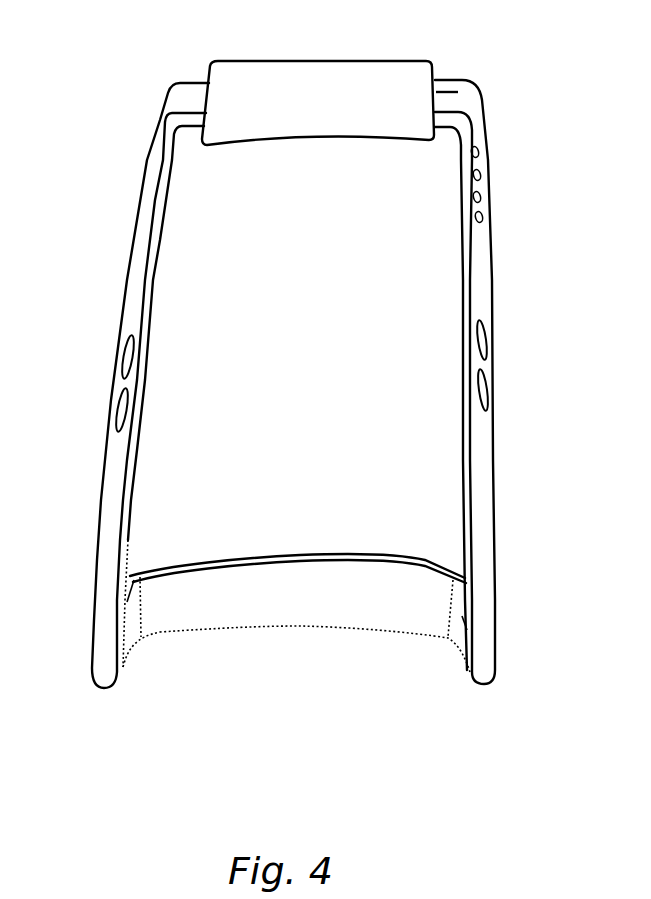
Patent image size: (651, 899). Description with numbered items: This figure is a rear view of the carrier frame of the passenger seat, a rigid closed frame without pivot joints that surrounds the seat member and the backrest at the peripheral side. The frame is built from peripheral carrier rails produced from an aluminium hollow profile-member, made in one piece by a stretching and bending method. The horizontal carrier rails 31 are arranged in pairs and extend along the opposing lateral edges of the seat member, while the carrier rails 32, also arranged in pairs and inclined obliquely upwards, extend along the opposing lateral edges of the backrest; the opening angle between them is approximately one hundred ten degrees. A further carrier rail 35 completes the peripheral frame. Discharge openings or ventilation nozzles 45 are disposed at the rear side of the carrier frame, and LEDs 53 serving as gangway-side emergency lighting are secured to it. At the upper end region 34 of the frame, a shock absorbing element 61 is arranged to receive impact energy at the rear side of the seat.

The carrier rails 31 is at (128, 603).
The carrier rails 32 is at (480, 270).
The upper end region 34 is at (443, 97).
The carrier rail 35 is at (310, 580).
The ventilation nozzles 45 is at (492, 332).
The LEDs 53 is at (487, 150).
The shock absorbing element 61 is at (338, 70).